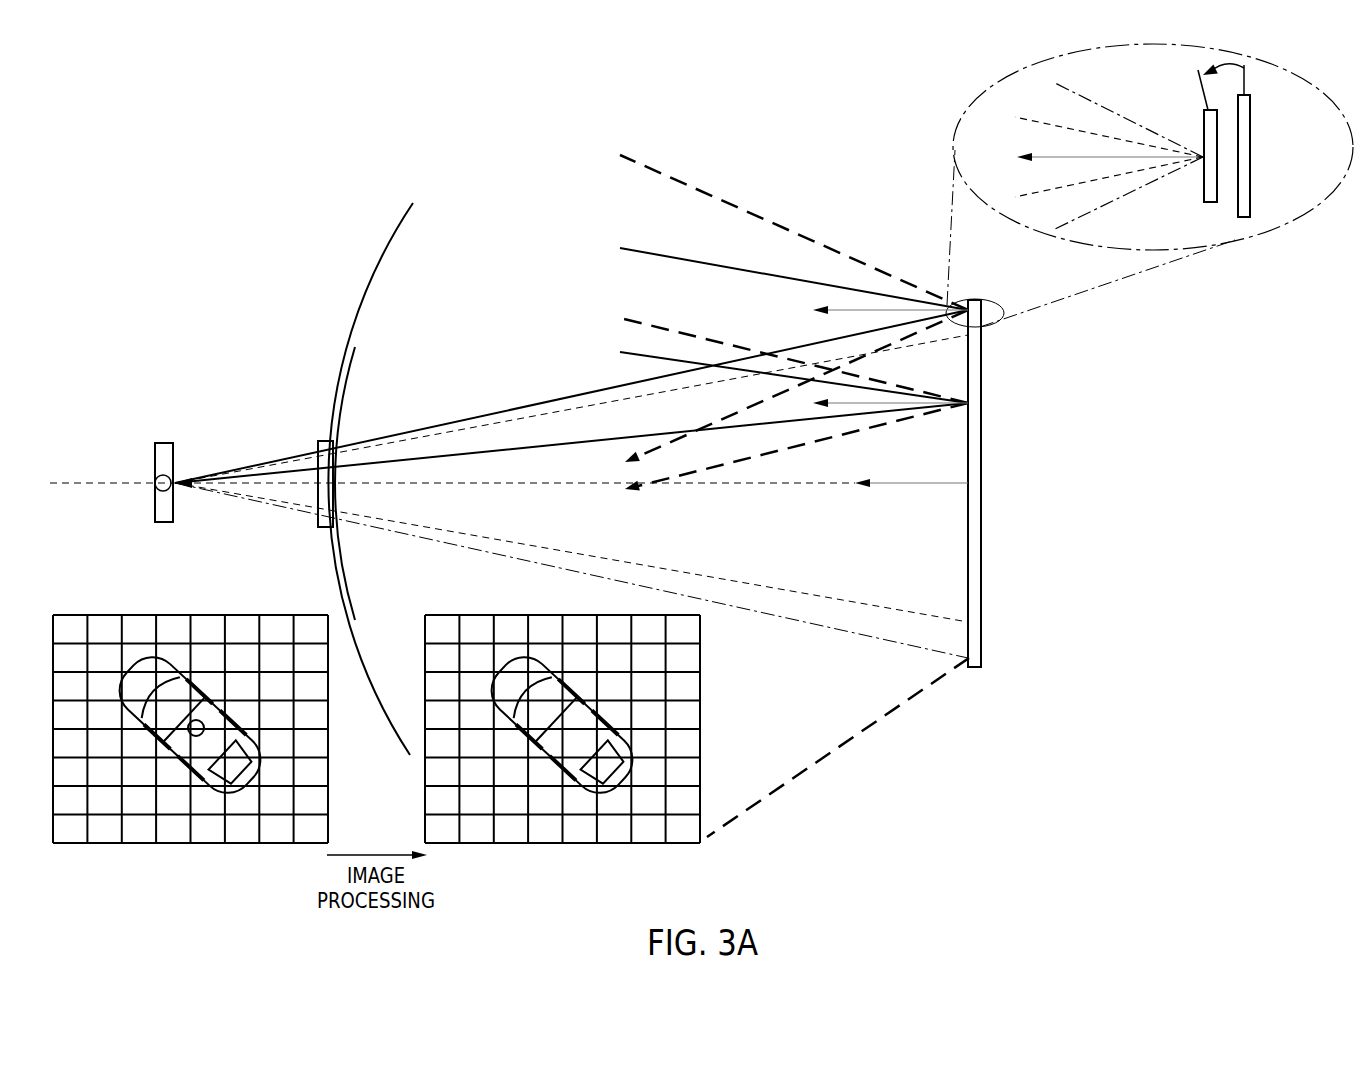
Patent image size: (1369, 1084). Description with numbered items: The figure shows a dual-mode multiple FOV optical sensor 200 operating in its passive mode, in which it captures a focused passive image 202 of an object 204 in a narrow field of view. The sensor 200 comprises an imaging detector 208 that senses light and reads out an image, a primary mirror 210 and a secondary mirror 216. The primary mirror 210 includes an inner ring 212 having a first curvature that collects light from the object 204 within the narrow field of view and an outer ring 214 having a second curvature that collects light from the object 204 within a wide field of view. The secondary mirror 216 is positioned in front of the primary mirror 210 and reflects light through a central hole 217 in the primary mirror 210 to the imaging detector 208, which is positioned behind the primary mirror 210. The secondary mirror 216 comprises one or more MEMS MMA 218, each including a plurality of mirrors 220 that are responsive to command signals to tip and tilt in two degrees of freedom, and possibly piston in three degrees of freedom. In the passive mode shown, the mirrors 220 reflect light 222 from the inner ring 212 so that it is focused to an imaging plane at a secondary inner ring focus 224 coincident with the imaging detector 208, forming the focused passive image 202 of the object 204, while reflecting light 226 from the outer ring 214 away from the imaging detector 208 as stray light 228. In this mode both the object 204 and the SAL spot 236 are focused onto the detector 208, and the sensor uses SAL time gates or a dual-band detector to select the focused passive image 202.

The dual-mode multiple FOV optical sensor 200 is at (189, 130).
The focused passive image 202 is at (700, 718).
The object 204 is at (207, 715).
The imaging detector 208 is at (164, 443).
The primary mirror 210 is at (353, 479).
The inner ring 212 is at (346, 382).
The outer ring 214 is at (385, 250).
The secondary mirror 216 is at (1002, 449).
The central hole 217 is at (334, 497).
The MEMS MMA 218 is at (1251, 155).
The mirrors 220 is at (1208, 202).
The light from the inner ring 222 is at (665, 253).
The secondary inner ring focus 224 is at (156, 484).
The light from the outer ring 226 is at (685, 184).
The stray light 228 is at (800, 447).
The SAL spot 236 is at (194, 733).